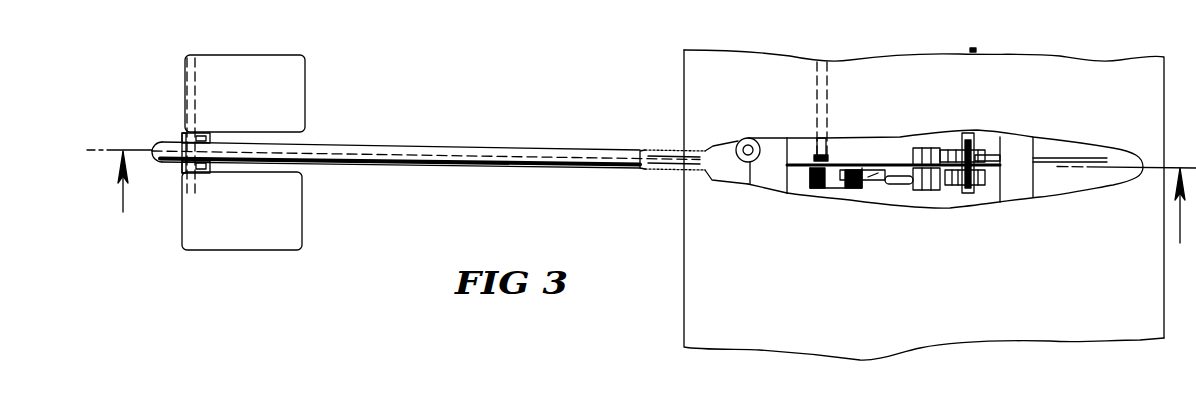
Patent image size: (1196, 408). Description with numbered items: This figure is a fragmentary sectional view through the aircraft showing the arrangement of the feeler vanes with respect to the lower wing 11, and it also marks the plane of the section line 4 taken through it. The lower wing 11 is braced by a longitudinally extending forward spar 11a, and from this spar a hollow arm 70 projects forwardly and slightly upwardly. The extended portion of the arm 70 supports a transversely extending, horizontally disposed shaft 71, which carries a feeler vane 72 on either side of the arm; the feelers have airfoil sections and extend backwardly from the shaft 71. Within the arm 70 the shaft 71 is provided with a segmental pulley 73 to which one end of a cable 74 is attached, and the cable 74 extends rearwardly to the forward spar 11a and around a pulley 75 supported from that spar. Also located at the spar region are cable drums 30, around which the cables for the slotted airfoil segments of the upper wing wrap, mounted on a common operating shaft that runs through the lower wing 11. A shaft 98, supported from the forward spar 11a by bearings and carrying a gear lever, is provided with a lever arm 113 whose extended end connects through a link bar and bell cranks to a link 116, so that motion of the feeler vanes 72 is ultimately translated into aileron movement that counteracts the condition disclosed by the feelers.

The section line 4- 4 is at (641, 204).
The lower wing 11 is at (714, 320).
The forward spar 11a is at (780, 172).
The cable drum 30 is at (950, 158).
The arm 70 is at (574, 130).
The shaft 71 is at (188, 102).
The feeler vane 72 is at (288, 193).
The segmental pulley 73 is at (177, 162).
The cable 74 is at (650, 169).
The pulley 75 is at (761, 118).
The shaft 98 is at (825, 158).
The lever arm 113 is at (883, 236).
The link 116 is at (1028, 188).